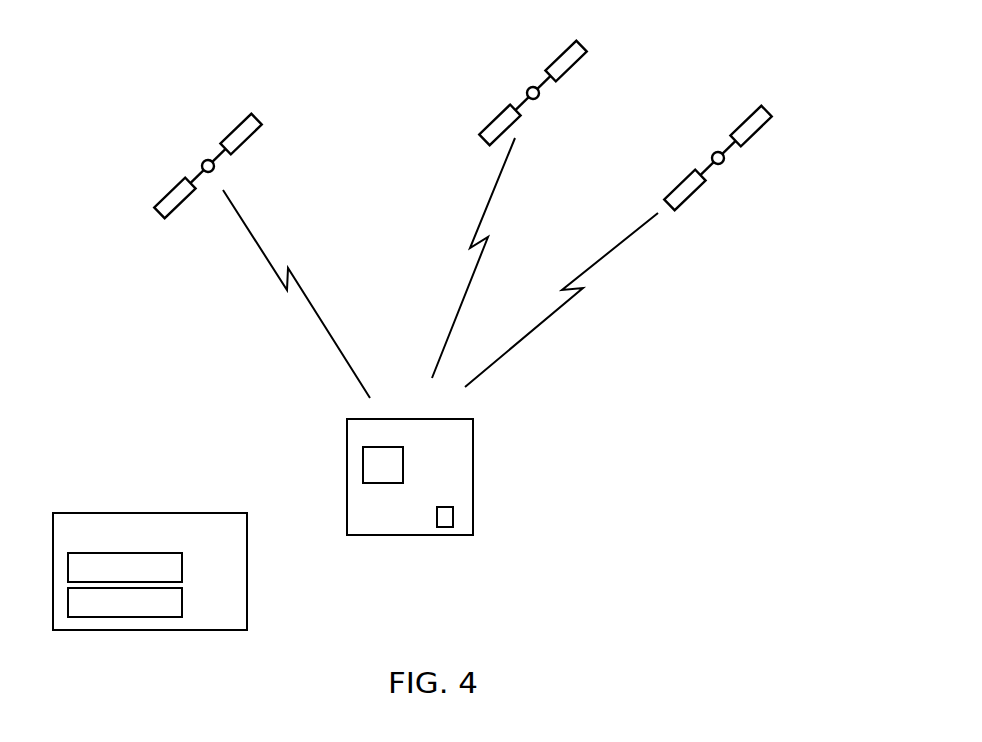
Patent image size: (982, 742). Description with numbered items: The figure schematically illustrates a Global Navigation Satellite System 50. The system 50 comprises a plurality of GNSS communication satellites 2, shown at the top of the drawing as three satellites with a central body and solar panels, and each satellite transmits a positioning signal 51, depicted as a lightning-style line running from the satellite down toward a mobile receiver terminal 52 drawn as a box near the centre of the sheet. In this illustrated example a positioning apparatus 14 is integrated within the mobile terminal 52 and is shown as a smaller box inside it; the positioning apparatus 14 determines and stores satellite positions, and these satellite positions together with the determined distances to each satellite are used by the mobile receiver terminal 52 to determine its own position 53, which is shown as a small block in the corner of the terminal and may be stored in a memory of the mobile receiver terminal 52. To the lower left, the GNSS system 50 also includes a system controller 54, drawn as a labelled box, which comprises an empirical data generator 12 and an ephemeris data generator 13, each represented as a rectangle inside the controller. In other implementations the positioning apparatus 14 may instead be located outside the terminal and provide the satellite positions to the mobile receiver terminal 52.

The GNSS communication satellite 2 is at (203, 160).
The positioning signal 51 is at (315, 315).
The Global Navigation Satellite System 50 is at (768, 280).
The mobile receiver terminal 52 is at (408, 474).
The positioning apparatus 14 is at (363, 463).
The position 53 is at (453, 517).
The system controller 54 is at (150, 549).
The empirical data generator 12 is at (183, 570).
The ephemeris data generator 13 is at (183, 605).